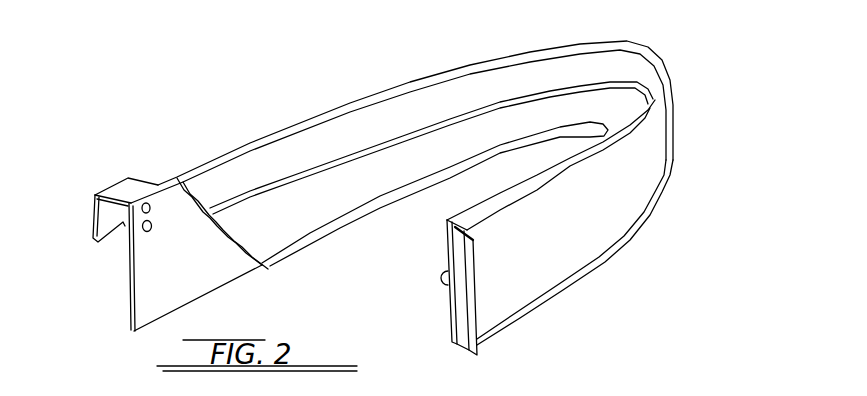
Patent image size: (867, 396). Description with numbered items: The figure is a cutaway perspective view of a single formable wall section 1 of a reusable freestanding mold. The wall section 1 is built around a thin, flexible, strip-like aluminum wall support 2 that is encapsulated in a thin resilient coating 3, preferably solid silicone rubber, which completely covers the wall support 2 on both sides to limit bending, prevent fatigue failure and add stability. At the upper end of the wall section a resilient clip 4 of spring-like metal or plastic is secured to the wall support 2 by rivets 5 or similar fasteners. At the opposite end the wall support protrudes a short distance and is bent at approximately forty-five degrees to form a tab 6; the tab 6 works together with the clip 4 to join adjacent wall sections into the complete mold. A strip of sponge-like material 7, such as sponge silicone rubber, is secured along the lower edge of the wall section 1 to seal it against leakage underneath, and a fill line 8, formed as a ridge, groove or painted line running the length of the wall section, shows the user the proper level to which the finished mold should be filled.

The wall section 1 is at (709, 13).
The wall support 2 is at (130, 302).
The resilient coating 3 is at (560, 270).
The resilient clip 4 is at (97, 214).
The rivets 5 is at (143, 200).
The tab 6 is at (473, 353).
The strip of sponge-like material 7 is at (608, 262).
The fill line 8 is at (451, 117).